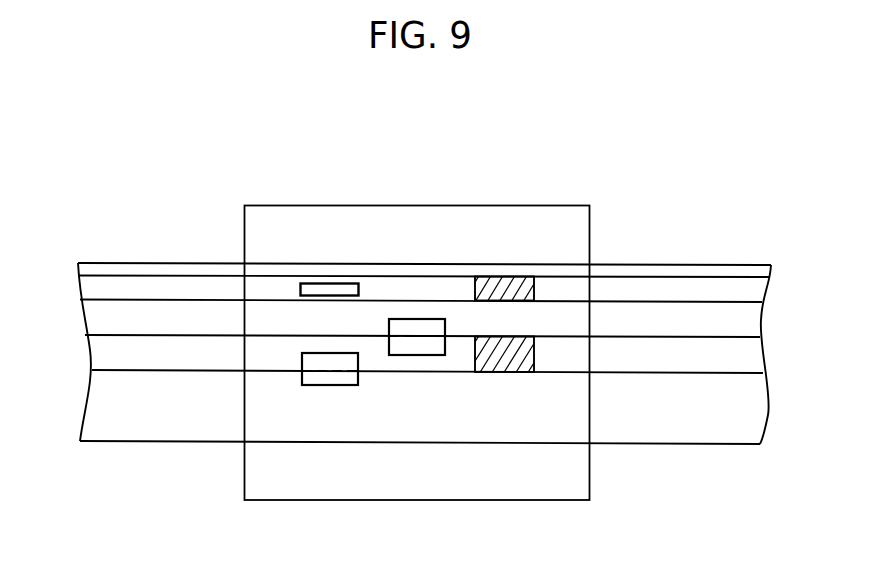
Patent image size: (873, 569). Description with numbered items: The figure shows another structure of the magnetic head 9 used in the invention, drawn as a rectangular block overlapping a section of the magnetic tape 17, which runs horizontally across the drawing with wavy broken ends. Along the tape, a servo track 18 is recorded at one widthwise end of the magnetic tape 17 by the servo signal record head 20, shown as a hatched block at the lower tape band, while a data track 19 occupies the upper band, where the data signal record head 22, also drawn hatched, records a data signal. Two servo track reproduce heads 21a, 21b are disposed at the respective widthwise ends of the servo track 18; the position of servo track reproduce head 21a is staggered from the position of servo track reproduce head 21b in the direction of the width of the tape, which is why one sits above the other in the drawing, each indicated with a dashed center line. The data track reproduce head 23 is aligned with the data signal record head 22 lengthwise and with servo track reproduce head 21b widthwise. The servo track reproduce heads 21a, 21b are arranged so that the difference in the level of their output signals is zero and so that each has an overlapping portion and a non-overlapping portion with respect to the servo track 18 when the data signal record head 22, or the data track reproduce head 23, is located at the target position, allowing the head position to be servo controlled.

The magnetic head 9 is at (398, 467).
The magnetic tape 17 is at (110, 317).
The servo track 18 is at (715, 358).
The data track 19 is at (725, 293).
The servo signal record head 20 is at (504, 372).
The servo track reproduce head 21a is at (409, 319).
The servo track reproduce head 21b is at (318, 385).
The data signal record head 22 is at (507, 276).
The data track reproduce head 23 is at (319, 283).